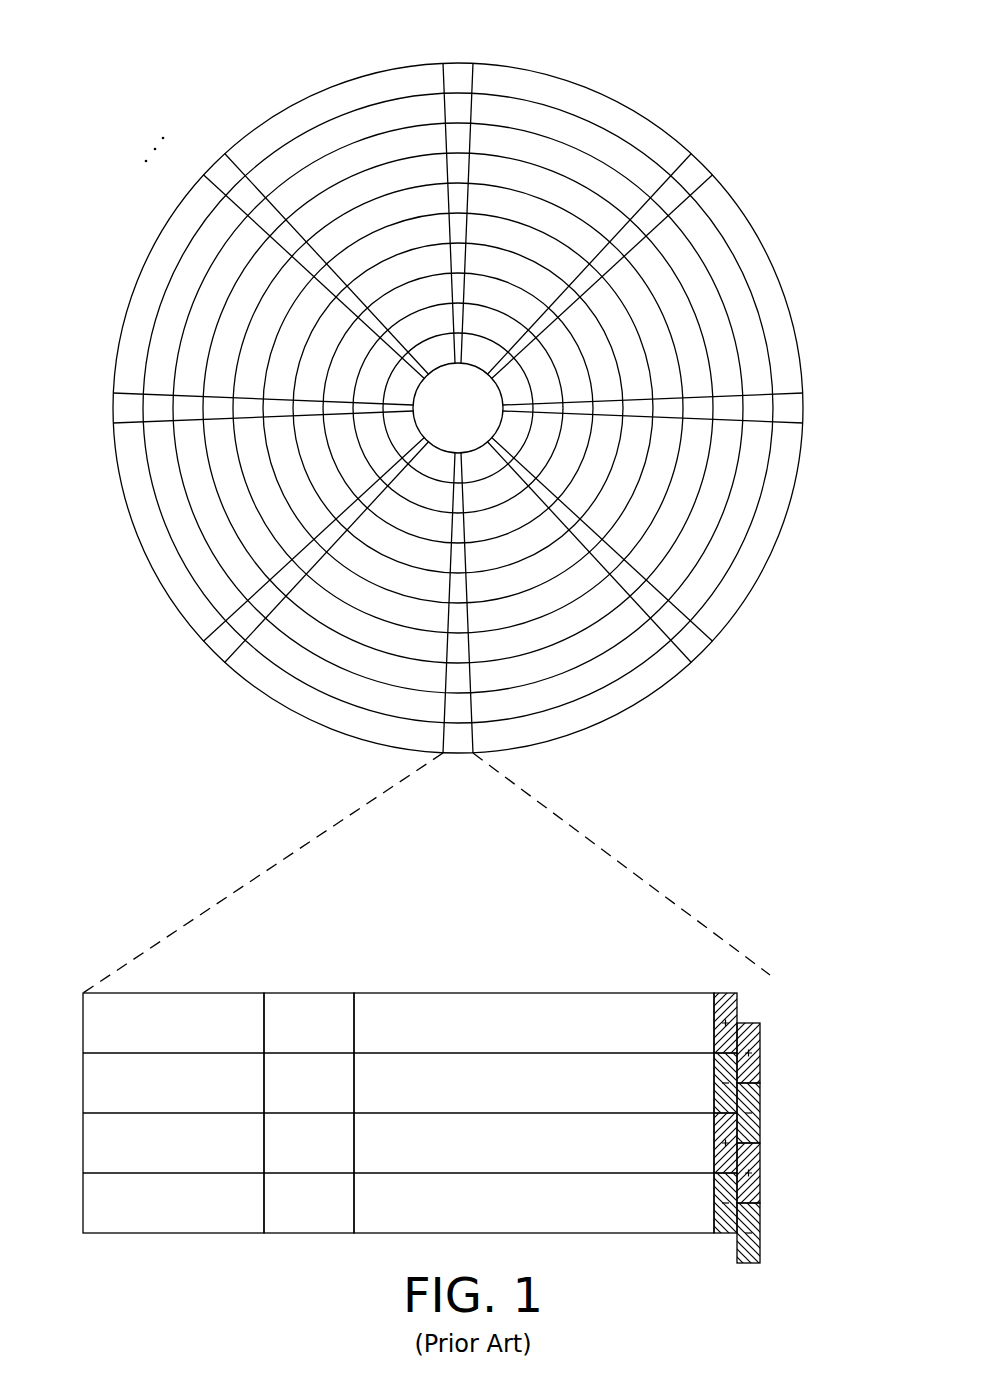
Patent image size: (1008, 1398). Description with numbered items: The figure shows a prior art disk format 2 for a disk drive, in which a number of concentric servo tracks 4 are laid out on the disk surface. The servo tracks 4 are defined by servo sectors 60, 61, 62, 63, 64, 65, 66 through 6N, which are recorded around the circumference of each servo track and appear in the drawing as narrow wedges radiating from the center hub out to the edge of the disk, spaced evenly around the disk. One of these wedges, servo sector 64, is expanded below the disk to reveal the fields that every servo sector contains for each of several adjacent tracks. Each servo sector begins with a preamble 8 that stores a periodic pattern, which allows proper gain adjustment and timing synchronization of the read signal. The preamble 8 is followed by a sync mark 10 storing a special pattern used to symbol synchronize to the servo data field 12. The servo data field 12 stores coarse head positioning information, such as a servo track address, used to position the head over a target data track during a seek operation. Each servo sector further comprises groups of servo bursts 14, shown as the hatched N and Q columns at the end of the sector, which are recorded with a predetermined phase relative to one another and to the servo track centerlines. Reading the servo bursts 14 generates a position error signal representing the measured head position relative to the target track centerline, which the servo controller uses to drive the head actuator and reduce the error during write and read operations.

The disk format 2 is at (200, 65).
The servo track 4 is at (576, 132).
The servo sector 60 is at (460, 72).
The servo sector 61 is at (698, 170).
The servo sector 62 is at (806, 410).
The servo sector 63 is at (695, 646).
The servo sector 64 is at (302, 832).
The servo sector 65 is at (222, 648).
The servo sector 66 is at (120, 408).
The servo sector 6N is at (222, 170).
The preamble 8 is at (183, 993).
The sync mark 10 is at (312, 993).
The servo data field 12 is at (521, 993).
The servo bursts 14 is at (760, 988).